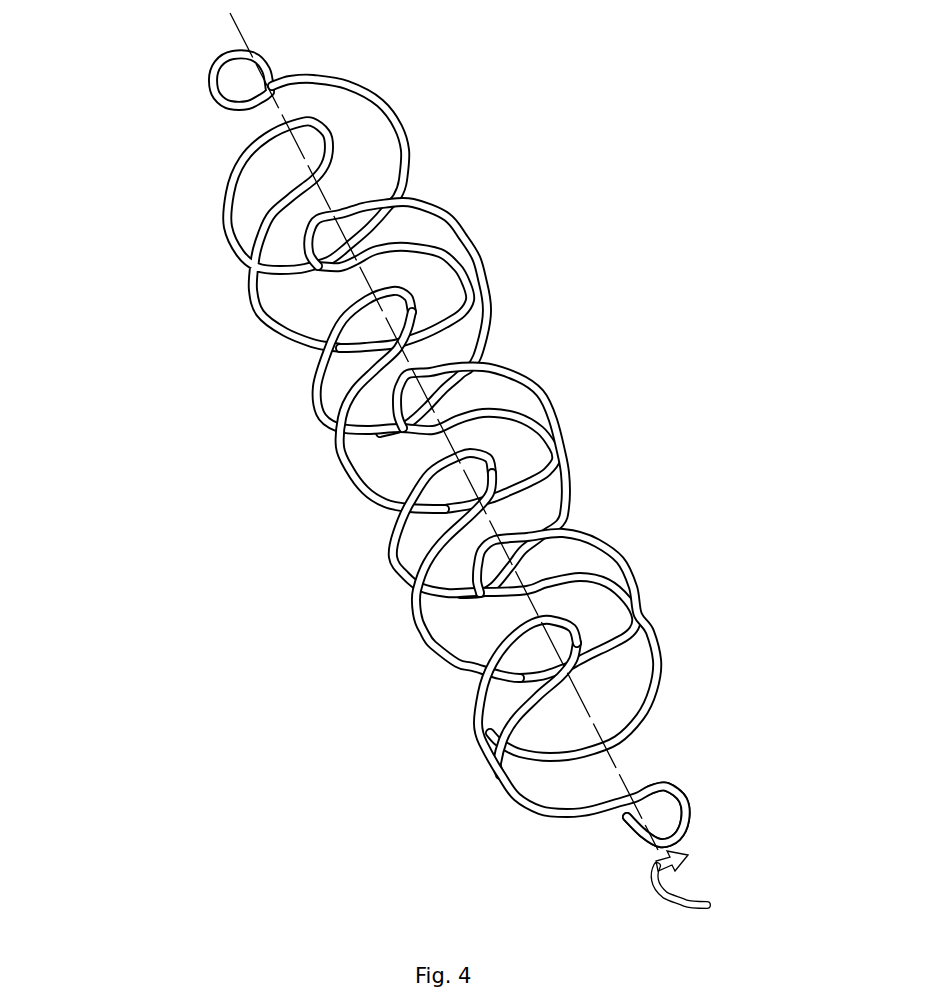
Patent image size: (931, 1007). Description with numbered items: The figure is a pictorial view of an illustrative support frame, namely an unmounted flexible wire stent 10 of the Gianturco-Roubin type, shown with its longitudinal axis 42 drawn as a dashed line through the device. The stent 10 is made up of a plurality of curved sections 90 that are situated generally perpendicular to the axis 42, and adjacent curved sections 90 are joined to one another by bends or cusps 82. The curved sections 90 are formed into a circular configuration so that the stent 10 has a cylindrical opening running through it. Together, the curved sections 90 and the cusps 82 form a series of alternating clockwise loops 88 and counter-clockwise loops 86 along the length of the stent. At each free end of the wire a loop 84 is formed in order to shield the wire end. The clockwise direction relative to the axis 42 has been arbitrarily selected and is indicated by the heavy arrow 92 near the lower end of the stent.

The flexible stent 10 is at (433, 448).
The longitudinal axis 42 is at (253, 32).
The bends or cusps 82 is at (413, 297).
The loop 84 is at (210, 80).
The counter-clockwise loops 86 is at (567, 530).
The clockwise loops 88 is at (497, 647).
The curved sections 90 is at (385, 497).
The heavy arrow 92 is at (650, 895).